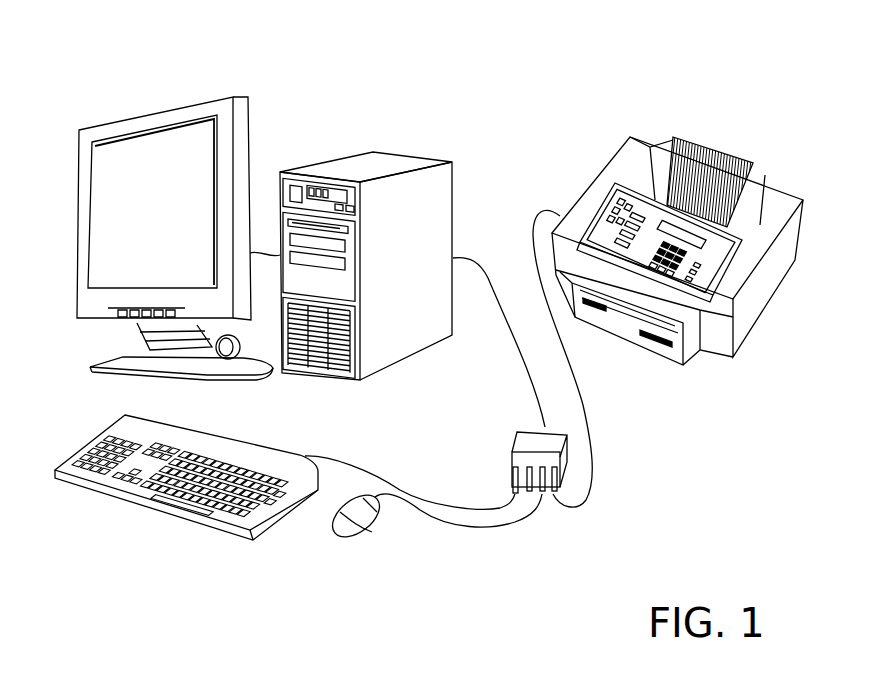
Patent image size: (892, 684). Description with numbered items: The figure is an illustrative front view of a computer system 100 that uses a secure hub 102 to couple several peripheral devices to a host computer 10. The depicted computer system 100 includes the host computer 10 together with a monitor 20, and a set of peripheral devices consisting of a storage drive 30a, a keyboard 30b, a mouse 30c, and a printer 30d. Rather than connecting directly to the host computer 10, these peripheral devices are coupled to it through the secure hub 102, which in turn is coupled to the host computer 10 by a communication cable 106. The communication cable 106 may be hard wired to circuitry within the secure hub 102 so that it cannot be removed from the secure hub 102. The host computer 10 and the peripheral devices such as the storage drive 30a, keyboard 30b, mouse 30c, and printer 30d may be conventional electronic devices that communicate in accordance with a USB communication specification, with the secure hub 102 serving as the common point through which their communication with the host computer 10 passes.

The host computer 10 is at (428, 190).
The monitor 20 is at (247, 137).
The computer system 100 is at (677, 232).
The secure hub 102 is at (495, 430).
The communication cable 106 is at (490, 273).
The storage drive 30a is at (510, 488).
The keyboard 30b is at (228, 528).
The mouse 30c is at (358, 543).
The printer 30d is at (743, 345).